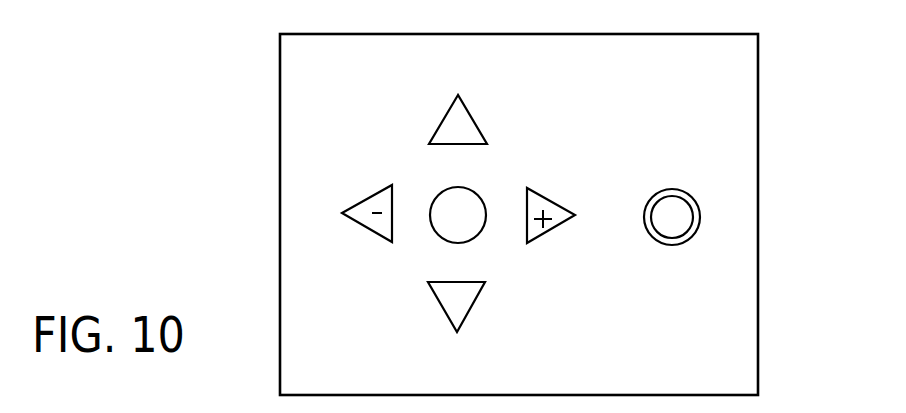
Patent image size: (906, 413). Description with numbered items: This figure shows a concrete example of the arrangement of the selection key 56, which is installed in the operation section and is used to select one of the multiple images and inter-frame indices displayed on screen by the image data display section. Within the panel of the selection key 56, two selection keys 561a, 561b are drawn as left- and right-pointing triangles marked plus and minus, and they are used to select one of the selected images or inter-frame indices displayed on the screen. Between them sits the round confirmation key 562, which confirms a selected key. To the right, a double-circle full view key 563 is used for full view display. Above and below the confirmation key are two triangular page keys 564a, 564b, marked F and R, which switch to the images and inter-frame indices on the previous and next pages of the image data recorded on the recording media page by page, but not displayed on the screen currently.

The selection key 56 is at (622, 89).
The selection key 561a is at (552, 232).
The selection key 561b is at (382, 235).
The confirmation key 562 is at (478, 193).
The full view key 563 is at (672, 189).
The page key 564a is at (437, 131).
The page key 564b is at (468, 310).